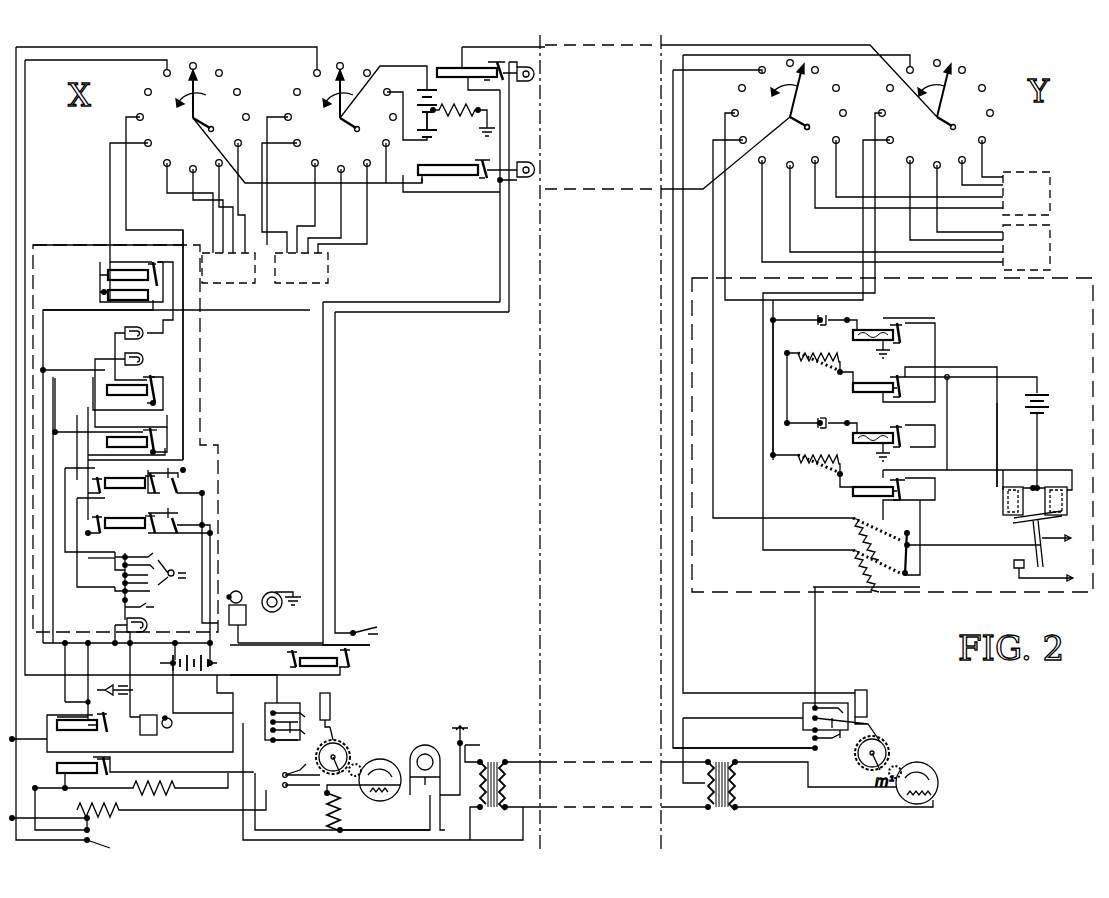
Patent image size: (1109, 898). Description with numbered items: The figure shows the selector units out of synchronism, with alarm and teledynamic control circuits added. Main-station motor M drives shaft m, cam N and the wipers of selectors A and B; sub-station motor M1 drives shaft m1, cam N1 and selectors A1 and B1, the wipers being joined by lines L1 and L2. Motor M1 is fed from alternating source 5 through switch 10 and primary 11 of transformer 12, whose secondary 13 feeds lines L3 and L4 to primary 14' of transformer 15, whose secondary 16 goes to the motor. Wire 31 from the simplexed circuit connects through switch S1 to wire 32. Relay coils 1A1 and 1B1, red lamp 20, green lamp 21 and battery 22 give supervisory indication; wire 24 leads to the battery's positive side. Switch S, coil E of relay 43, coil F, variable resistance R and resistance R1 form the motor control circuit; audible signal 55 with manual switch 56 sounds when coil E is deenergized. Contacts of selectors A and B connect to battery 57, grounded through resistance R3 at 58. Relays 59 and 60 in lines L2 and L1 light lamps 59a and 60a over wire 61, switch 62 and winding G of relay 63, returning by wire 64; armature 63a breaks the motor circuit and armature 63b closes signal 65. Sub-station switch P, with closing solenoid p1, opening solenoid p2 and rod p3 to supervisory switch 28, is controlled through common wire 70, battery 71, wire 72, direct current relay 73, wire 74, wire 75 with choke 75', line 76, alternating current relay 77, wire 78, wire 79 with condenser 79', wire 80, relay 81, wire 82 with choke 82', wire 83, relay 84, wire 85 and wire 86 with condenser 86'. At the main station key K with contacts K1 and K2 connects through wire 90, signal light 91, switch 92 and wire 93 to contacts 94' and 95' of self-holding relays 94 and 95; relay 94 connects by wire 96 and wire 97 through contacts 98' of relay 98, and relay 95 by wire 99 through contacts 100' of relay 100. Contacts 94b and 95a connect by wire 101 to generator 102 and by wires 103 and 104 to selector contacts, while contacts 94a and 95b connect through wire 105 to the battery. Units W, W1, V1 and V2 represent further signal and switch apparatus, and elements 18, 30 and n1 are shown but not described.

The relay coil 1A1 is at (100, 279).
The relay coil 1B1 is at (100, 299).
The source of alternating or pulsating current 5 is at (424, 752).
The manually operable switch 10 is at (463, 742).
The transformer primary 11 is at (473, 792).
The transformer 12 is at (490, 806).
The transformer secondary 13 is at (508, 782).
The transformer primary 14' is at (699, 785).
The distant station transformer 15 is at (722, 807).
The transformer secondary 16 is at (740, 789).
The coil 18 is at (346, 815).
The red lamp 20 is at (141, 353).
The green lamp 21 is at (145, 360).
The local battery 22 is at (210, 663).
The wire 24 is at (53, 373).
The supervisory signal switch 28 is at (902, 547).
The conductor 30 is at (245, 822).
The wire 31 is at (688, 737).
The wire 32 is at (822, 617).
The relay switch 43 is at (108, 730).
The audible signal 55 is at (172, 724).
The manual switch 56 is at (135, 690).
The battery 57 is at (425, 111).
The ground 58 is at (482, 131).
The double wound relay 59 is at (458, 65).
The lamp 59a is at (526, 83).
The double wound relay 60 is at (444, 168).
The lamp 60a is at (536, 171).
The wire 61 is at (514, 121).
The manual switch 62 is at (364, 624).
The relay 63 is at (331, 657).
The relay armature 63a is at (355, 660).
The relay armature 63b is at (291, 662).
The wire 64 is at (403, 473).
The audible signal 65 is at (244, 602).
The common wire 70 is at (1046, 462).
The local battery 71 is at (1049, 406).
The wire 72 is at (997, 403).
The direct current relay 73 is at (901, 372).
The wire 74 is at (1010, 380).
The wire 75 is at (819, 356).
The choke 75' is at (811, 388).
The line 76 is at (948, 332).
The alternating current relay 77 is at (885, 327).
The wire 78 is at (948, 353).
The wire 79 is at (814, 315).
The condenser 79' is at (807, 387).
The wire 80 is at (987, 469).
The direct current relay 81 is at (898, 499).
The wire 82 is at (812, 459).
The choke coil 82' is at (796, 474).
The wire 83 is at (936, 501).
The alternating current relay 84 is at (887, 433).
The wire 85 is at (905, 445).
The wire 86 is at (821, 411).
The condenser 86' is at (831, 409).
The wire 90 is at (115, 626).
The signal light 91 is at (150, 624).
The manually operable switch 92 is at (153, 605).
The wire 93 is at (115, 571).
The self holding relay 94 is at (105, 506).
The relay contacts 94' is at (91, 484).
The relay switch contacts 94a is at (177, 483).
The relay switch contacts 94b is at (205, 461).
The self holding relay 95 is at (111, 542).
The relay contacts 95' is at (100, 531).
The relay switch contacts 95a is at (185, 501).
The relay switch contacts 95b is at (177, 525).
The wire 96 is at (74, 570).
The wire 97 is at (78, 450).
The relay 98 is at (108, 510).
The relay contacts 98' is at (189, 384).
The wire 99 is at (100, 412).
The relay 100 is at (189, 432).
The relay contacts 100' is at (195, 440).
The wire 101 is at (202, 563).
The generator 102 is at (282, 612).
The wire 103 is at (185, 310).
The wire 104 is at (200, 323).
The wire 105 is at (212, 543).
The selector A is at (220, 130).
The selector B is at (366, 130).
The selector A1 is at (789, 114).
The selector B1 is at (936, 114).
The switch key K is at (156, 578).
The key contacts K1 is at (150, 559).
The key contacts K2 is at (118, 592).
The relay coil E is at (72, 733).
The coil F is at (114, 763).
The relay winding G is at (337, 674).
The variable resistance R is at (103, 808).
The resistance R1 is at (150, 798).
The resistance R3 is at (456, 101).
The switch S is at (316, 717).
The switch S1 is at (803, 705).
The cam element N is at (344, 750).
The cam element N1 is at (884, 752).
The actuating device M is at (375, 772).
The actuating device M1 is at (939, 779).
The shaft m is at (313, 776).
The shaft m1 is at (805, 126).
The link n1 is at (886, 734).
The switch P is at (1044, 564).
The switch closing solenoid p1 is at (1001, 503).
The switch opening solenoid p2 is at (1069, 503).
The rod p3 is at (972, 548).
The switch apparatus V1 is at (1026, 193).
The voltmeter V2 is at (1026, 247).
The relay and lamp circuit W is at (228, 268).
The relay and lamp circuit W1 is at (301, 268).
The channel L1 is at (613, 196).
The channel L2 is at (613, 45).
The line L3 is at (613, 753).
The line L4 is at (613, 798).